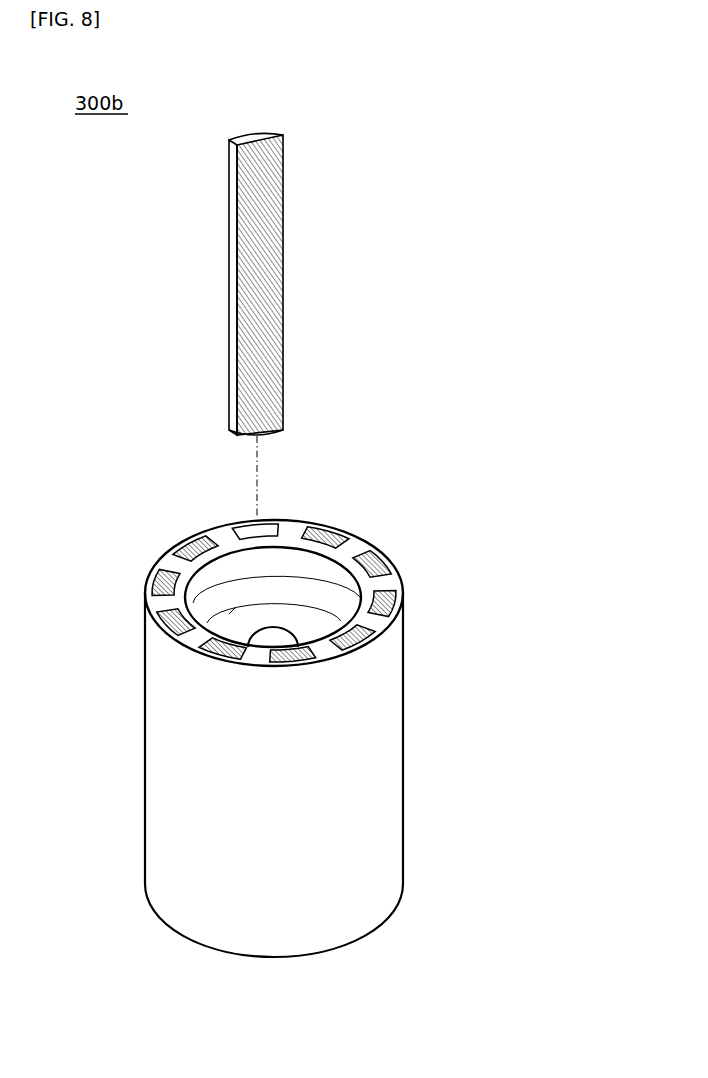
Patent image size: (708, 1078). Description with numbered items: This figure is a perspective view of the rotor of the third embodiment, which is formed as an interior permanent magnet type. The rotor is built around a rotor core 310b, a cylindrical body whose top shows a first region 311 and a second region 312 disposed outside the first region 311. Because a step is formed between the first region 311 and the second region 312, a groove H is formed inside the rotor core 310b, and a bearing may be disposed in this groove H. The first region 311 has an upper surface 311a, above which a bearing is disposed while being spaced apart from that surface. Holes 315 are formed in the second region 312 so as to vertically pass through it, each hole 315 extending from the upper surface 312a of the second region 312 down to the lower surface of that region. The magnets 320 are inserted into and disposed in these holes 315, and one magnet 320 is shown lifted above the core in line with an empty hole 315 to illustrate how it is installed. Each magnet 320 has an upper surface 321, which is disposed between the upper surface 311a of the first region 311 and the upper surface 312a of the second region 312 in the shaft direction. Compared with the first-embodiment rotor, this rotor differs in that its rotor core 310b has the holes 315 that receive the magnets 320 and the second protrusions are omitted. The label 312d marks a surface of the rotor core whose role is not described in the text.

The rotor core 310b is at (372, 738).
The first region 311 is at (402, 606).
The upper surface of the first region 311a is at (341, 605).
The second region 312 is at (412, 600).
The upper surface of the second region 312a is at (397, 572).
The inner wall surface 312d is at (235, 563).
The hole 315 is at (273, 530).
The magnet 320 is at (312, 221).
The upper surface of the magnet 321 is at (390, 560).
The groove H is at (235, 607).